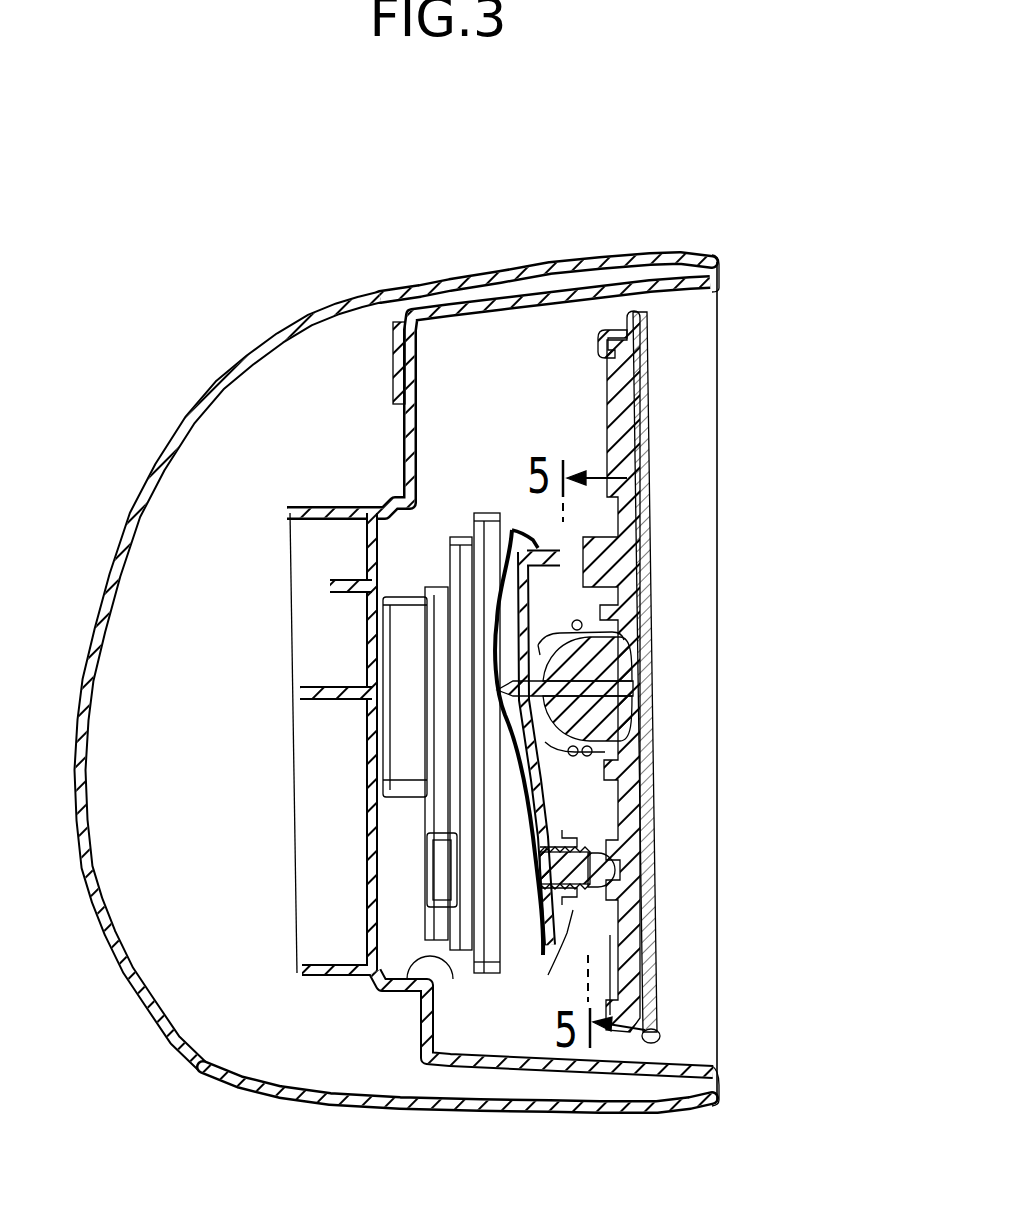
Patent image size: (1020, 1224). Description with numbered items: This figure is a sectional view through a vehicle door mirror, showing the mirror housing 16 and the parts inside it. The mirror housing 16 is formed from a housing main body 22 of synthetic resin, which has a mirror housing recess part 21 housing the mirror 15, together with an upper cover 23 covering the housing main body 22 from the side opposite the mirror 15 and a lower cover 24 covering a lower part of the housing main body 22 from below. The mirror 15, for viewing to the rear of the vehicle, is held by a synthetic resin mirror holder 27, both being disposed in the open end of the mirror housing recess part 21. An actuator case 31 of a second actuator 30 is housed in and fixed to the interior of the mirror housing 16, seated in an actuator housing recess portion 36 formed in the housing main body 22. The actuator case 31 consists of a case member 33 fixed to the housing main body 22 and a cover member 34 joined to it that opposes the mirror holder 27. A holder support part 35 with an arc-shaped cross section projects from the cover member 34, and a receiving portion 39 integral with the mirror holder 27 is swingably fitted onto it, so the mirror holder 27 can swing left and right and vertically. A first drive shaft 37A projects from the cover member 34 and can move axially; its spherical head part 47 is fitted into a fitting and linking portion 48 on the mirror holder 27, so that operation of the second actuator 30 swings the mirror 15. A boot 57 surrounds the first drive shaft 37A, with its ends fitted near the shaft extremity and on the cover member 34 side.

The mirror 15 is at (651, 695).
The mirror housing 16 is at (407, 635).
The mirror housing recess part 21 is at (665, 297).
The housing main body 22 is at (693, 262).
The upper cover 23 is at (228, 375).
The lower cover 24 is at (205, 1077).
The mirror holder 27 is at (612, 325).
The second actuator 30 is at (515, 529).
The actuator case 31 is at (347, 743).
The case member 33 is at (463, 820).
The cover member 34 is at (490, 920).
The holder support part 35 is at (645, 745).
The actuator housing recess portion 36 is at (430, 952).
The first drive shaft 37A is at (573, 847).
The receiving portion 39 is at (540, 750).
The spherical head part 47 is at (620, 892).
The fitting and linking portion 48 is at (600, 877).
The boot 57 is at (553, 960).